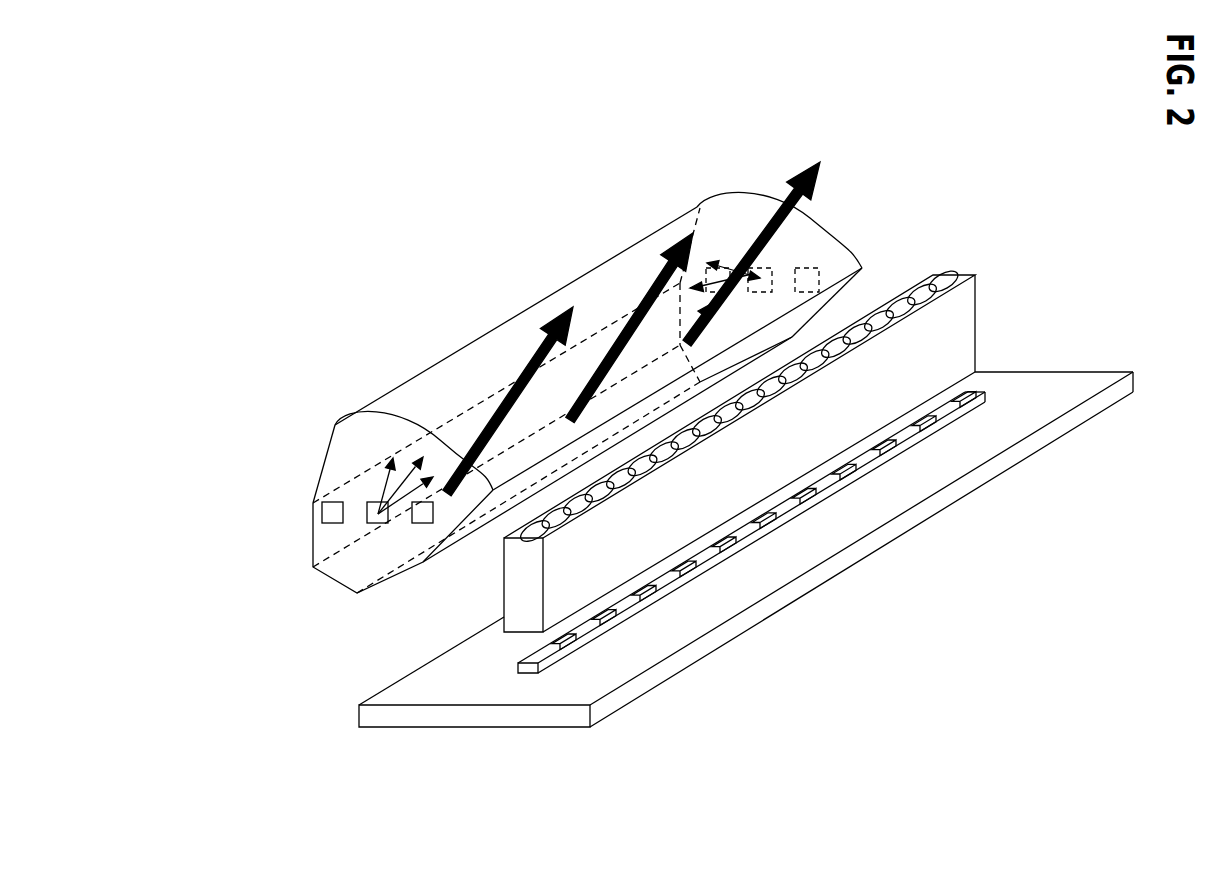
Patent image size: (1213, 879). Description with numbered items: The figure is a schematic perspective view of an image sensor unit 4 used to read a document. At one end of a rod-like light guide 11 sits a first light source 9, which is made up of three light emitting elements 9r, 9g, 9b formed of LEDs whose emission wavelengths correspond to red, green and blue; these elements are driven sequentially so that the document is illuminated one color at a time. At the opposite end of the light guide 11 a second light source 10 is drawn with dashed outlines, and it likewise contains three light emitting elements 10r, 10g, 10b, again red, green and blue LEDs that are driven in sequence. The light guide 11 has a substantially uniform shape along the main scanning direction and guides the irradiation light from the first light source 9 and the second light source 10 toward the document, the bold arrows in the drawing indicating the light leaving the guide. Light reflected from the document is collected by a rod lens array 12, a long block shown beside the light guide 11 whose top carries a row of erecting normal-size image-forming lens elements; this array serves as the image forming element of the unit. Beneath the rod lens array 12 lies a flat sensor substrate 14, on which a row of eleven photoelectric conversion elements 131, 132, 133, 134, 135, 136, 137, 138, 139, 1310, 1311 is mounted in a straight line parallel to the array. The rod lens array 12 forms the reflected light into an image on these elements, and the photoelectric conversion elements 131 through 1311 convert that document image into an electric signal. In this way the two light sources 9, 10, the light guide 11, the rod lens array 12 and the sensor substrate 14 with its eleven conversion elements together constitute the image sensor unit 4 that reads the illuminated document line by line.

The image sensor unit 4 is at (984, 197).
The first light source 9 is at (232, 535).
The light emitting element 9r is at (333, 512).
The light emitting element 9g is at (379, 523).
The light emitting element 9b is at (425, 523).
The second light source 10 is at (800, 63).
The light emitting element 10b is at (718, 268).
The light emitting element 10g is at (768, 268).
The light emitting element 10r is at (808, 268).
The light guide 11 is at (507, 322).
The rod lens array 12 is at (974, 311).
The photoelectric conversion element 131 is at (976, 398).
The photoelectric conversion element 132 is at (936, 422).
The photoelectric conversion element 133 is at (896, 446).
The photoelectric conversion element 134 is at (856, 470).
The photoelectric conversion element 135 is at (816, 494).
The photoelectric conversion element 136 is at (776, 519).
The photoelectric conversion element 137 is at (736, 543).
The photoelectric conversion element 138 is at (696, 567).
The photoelectric conversion element 139 is at (656, 592).
The photoelectric conversion element 1310 is at (616, 616).
The photoelectric conversion element 1311 is at (576, 640).
The sensor substrate 14 is at (452, 727).